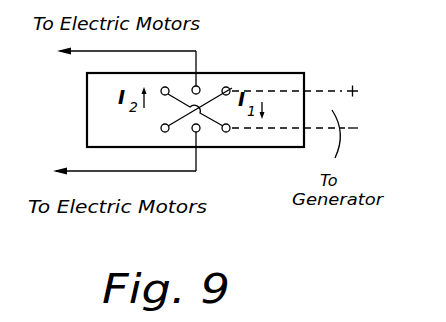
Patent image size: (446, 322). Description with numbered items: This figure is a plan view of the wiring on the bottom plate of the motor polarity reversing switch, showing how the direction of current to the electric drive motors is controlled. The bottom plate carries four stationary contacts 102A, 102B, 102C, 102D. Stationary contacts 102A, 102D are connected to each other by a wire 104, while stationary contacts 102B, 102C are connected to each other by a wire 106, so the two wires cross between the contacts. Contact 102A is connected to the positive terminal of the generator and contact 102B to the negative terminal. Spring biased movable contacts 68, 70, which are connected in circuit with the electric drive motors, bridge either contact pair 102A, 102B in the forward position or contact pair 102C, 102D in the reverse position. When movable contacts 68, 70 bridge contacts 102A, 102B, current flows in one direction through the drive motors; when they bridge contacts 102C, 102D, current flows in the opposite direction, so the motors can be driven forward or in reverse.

The movable contact 68 is at (198, 86).
The movable contact 70 is at (200, 132).
The stationary contact 102A is at (229, 87).
The stationary contact 102B is at (229, 133).
The stationary contact 102C is at (165, 87).
The stationary contact 102D is at (163, 133).
The wire 104 is at (232, 88).
The wire 106 is at (165, 95).